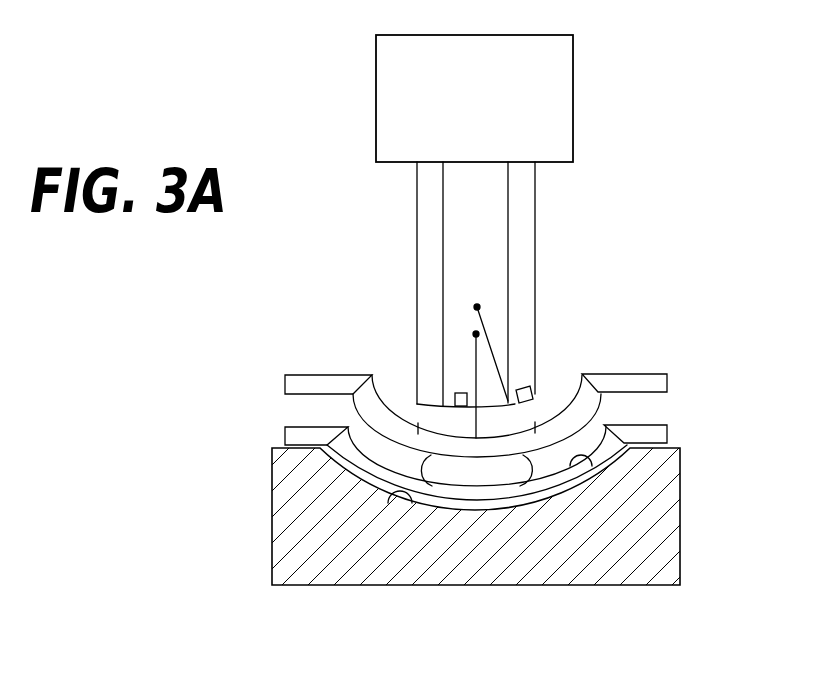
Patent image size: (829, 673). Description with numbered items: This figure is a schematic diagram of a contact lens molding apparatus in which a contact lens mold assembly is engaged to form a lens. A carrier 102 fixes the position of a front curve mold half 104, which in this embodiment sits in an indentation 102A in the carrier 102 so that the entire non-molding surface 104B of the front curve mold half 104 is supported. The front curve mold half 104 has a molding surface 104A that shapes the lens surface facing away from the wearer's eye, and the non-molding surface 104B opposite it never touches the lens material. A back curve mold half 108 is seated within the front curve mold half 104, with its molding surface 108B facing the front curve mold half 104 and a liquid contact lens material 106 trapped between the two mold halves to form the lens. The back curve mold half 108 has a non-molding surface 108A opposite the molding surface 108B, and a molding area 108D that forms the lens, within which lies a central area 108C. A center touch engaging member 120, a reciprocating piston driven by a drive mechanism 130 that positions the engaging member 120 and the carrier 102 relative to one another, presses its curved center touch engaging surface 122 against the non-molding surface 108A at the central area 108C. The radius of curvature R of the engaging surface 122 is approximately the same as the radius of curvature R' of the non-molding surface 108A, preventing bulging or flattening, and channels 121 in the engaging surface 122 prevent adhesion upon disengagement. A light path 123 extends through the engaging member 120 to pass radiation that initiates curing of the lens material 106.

The carrier 102 is at (273, 531).
The indentation 102A is at (390, 496).
The front curve mold half 104 is at (285, 436).
The molding surface 104A is at (590, 462).
The non-molding surface 104B is at (561, 494).
The liquid contact lens material 106 is at (477, 475).
The back curve mold half 108 is at (285, 385).
The non-molding surface 108A is at (577, 390).
The molding surface 108B is at (596, 398).
The central area 108C is at (515, 404).
The molding area 108D is at (571, 385).
The center touch engaging member 120 is at (417, 233).
The channels 121 is at (458, 392).
The center touch engaging surface 122 is at (455, 404).
The light path 123 is at (492, 198).
The drive mechanism 130 is at (376, 92).
The radius of curvature R is at (491, 341).
The radius of curvature R' is at (463, 384).